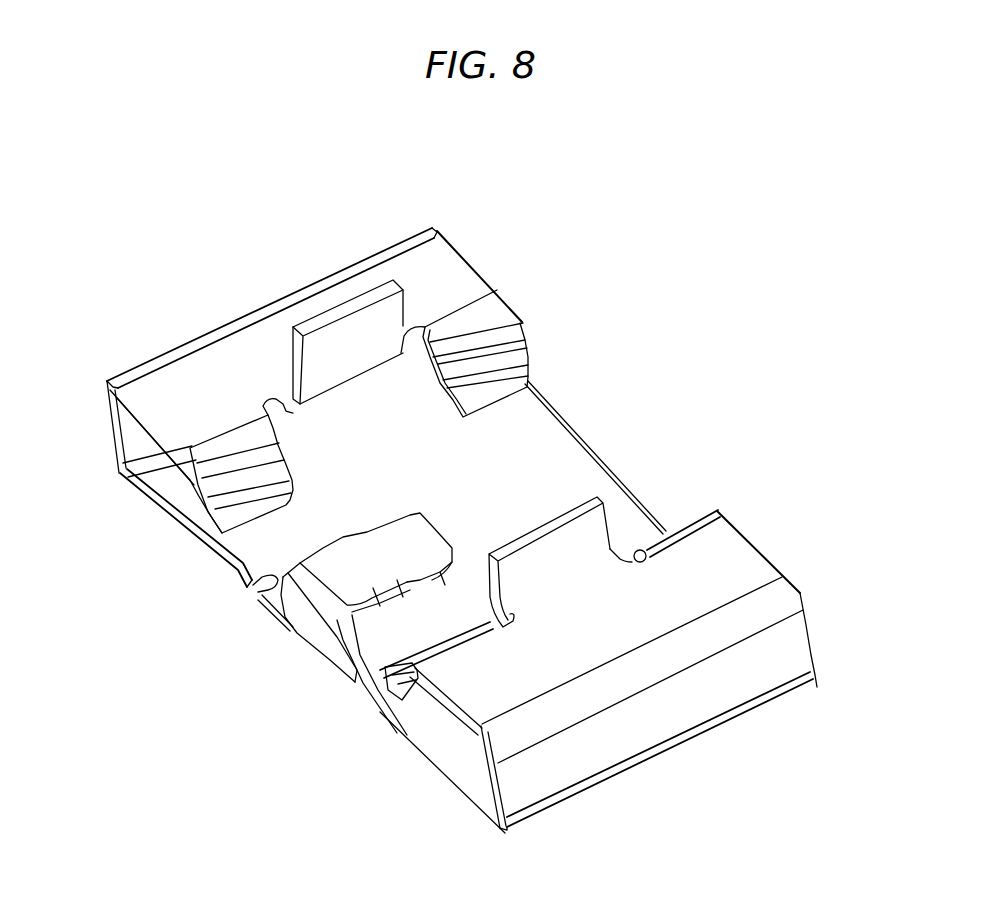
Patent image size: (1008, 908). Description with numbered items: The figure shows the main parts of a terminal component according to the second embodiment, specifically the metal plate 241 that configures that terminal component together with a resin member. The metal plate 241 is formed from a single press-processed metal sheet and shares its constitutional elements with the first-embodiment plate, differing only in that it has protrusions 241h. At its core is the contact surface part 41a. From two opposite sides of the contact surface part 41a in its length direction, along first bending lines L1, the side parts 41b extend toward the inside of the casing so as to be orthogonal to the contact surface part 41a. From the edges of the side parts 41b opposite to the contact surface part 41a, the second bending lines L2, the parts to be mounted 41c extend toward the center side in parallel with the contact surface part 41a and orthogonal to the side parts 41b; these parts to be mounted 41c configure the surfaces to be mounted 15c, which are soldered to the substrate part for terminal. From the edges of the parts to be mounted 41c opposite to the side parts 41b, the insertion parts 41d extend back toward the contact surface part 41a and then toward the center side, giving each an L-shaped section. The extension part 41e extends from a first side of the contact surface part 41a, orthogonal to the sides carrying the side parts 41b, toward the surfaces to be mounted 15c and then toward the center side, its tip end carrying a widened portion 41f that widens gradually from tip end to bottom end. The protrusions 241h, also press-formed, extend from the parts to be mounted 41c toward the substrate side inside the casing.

The metal plate 241 is at (742, 196).
The surfaces to be mounted 15c is at (312, 300).
The protrusions 241h is at (368, 325).
The second bending lines L2 is at (432, 226).
The first bending lines L1 is at (122, 487).
The contact surface part 41a is at (574, 432).
The side parts 41b is at (120, 474).
The parts to be mounted 41c is at (462, 268).
The insertion parts 41d is at (206, 530).
The extension part 41e is at (312, 607).
The widened portion 41f is at (336, 528).